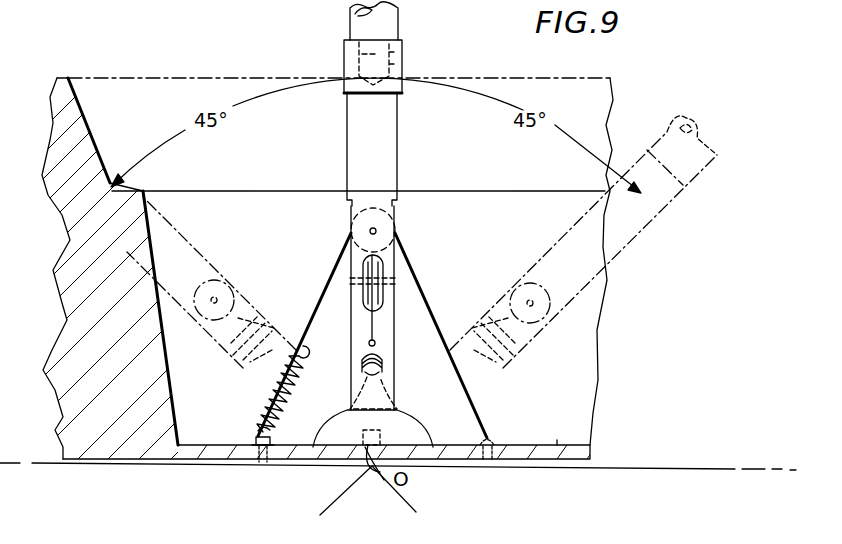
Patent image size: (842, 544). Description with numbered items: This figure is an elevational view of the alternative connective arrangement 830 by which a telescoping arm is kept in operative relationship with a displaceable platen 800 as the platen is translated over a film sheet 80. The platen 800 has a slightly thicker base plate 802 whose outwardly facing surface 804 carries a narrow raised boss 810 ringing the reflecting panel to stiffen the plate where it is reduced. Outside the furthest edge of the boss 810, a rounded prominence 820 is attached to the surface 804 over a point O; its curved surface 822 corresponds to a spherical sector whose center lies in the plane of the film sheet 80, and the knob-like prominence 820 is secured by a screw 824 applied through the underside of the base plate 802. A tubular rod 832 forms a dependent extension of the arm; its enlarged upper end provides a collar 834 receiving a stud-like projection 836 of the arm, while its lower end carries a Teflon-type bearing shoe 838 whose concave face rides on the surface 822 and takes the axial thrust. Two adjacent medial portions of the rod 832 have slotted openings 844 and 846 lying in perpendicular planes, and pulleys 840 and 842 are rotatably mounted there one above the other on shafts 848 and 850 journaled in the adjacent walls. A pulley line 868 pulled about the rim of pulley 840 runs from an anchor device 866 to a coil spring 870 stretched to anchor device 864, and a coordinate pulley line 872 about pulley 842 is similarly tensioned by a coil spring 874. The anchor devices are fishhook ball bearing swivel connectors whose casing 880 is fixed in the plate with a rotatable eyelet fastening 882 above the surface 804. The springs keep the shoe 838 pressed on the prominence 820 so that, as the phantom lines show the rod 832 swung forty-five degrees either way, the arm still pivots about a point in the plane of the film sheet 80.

The film sheet 80 is at (713, 469).
The displaceable platen 800 is at (172, 76).
The base plate 802 is at (588, 455).
The outwardly facing surface 804 is at (590, 441).
The boss 810 is at (556, 440).
The rounded prominence 820 is at (402, 432).
The surface of prominence 822 is at (358, 452).
The screw 824 is at (367, 470).
The connective arrangement 830 is at (318, 170).
The tubular rod 832 is at (388, 131).
The collar 834 is at (357, 42).
The stud-like projection 836 is at (345, 50).
The bearing shoe 838 is at (388, 397).
The pulley 840 is at (352, 218).
The pulley 842 is at (364, 276).
The slotted opening 844 is at (396, 214).
The slotted opening 846 is at (364, 297).
The shaft 848 is at (398, 283).
The shaft 850 is at (377, 231).
The pivotal anchor device 864 is at (258, 438).
The pivotal anchor device 866 is at (489, 441).
The pulley line 868 is at (465, 388).
The coil spring 870 is at (277, 386).
The pulley line 872 is at (374, 330).
The coil spring 874 is at (364, 364).
The casing 880 is at (258, 463).
The rotatable eyelet fastening 882 is at (270, 441).